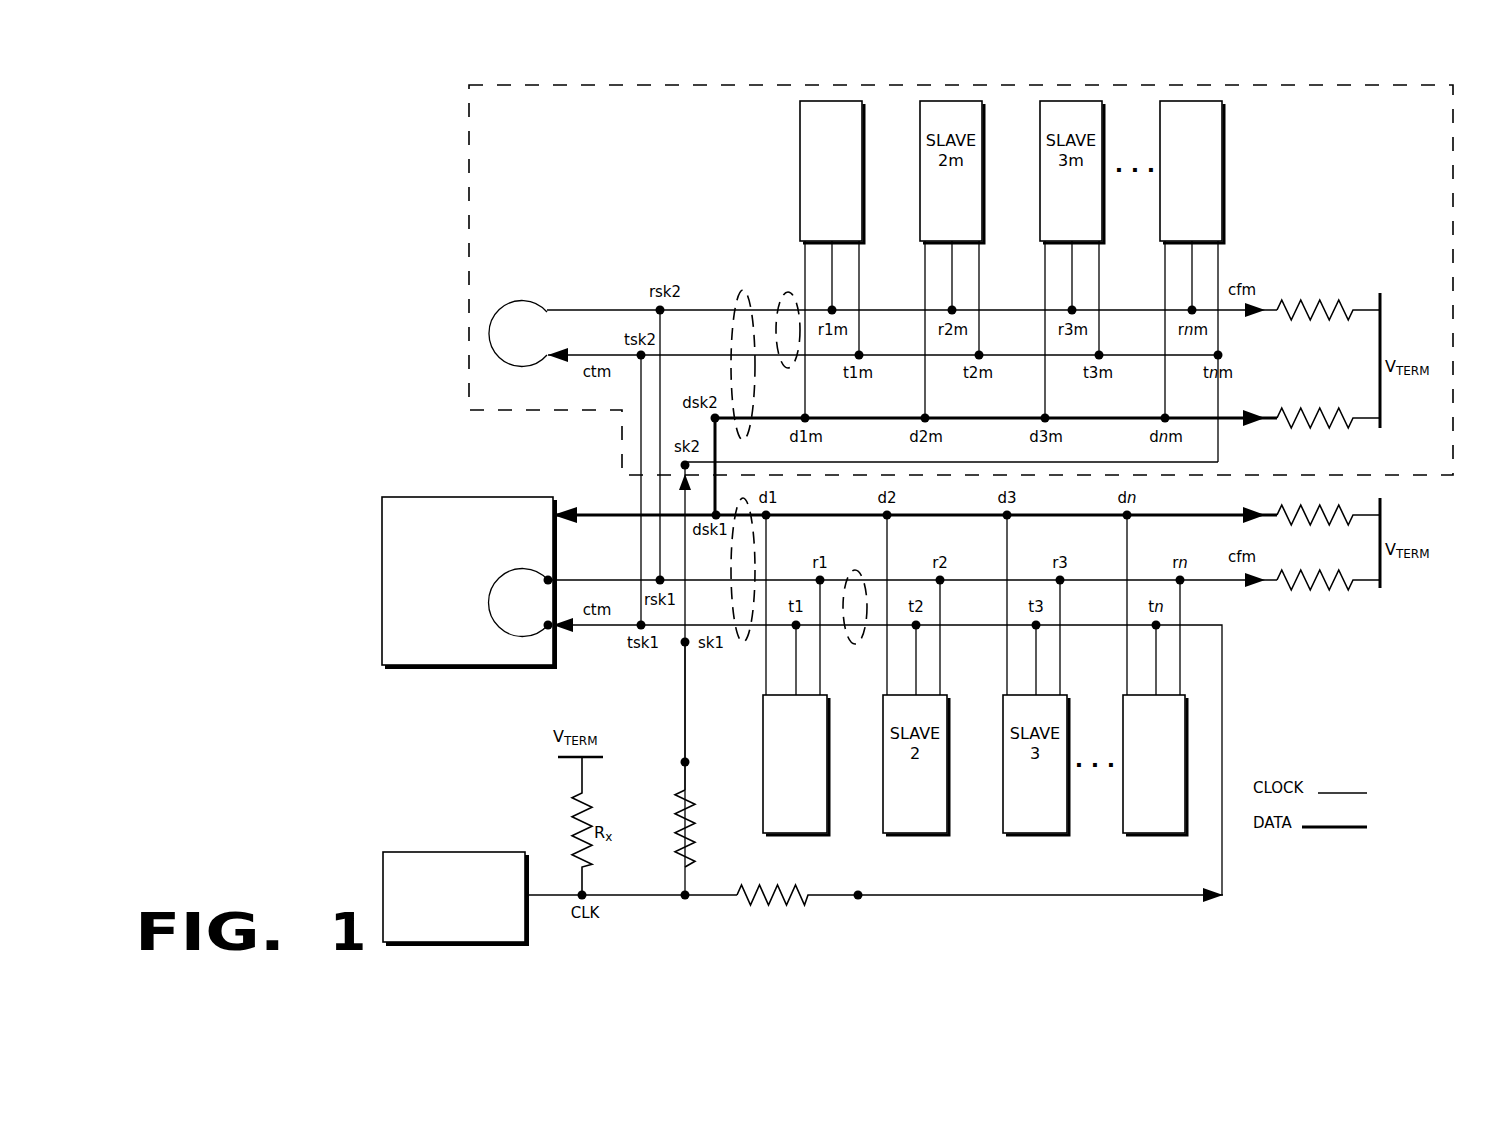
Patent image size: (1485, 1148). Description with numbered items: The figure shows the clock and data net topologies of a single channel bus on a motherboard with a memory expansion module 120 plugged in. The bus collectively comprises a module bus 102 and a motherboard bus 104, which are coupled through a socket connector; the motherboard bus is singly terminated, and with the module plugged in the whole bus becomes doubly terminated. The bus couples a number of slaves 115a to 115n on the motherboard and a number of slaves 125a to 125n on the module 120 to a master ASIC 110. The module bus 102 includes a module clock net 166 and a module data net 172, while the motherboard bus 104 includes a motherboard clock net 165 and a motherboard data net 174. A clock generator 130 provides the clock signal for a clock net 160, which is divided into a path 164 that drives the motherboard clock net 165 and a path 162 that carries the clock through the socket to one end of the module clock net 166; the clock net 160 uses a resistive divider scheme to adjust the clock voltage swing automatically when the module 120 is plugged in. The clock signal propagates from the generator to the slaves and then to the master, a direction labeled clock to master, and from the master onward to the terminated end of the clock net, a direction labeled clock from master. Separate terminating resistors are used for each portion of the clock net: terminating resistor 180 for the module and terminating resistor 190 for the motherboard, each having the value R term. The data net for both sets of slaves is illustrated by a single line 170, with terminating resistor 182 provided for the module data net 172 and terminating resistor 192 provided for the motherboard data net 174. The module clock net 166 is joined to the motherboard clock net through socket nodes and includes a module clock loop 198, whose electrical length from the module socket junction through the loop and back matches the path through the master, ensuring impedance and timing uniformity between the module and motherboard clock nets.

The module bus 102 is at (744, 292).
The motherboard bus 104 is at (743, 645).
The master ASIC 110 is at (521, 661).
The slave 115a is at (786, 828).
The slave 115n is at (1146, 828).
The memory expansion module 120 is at (468, 200).
The slave 125a is at (849, 233).
The slave 125n is at (1209, 233).
The clock generator 130 is at (493, 940).
The clock net 160 is at (650, 898).
The path 162 is at (683, 692).
The path 164 is at (950, 898).
The motherboard clock net 165 is at (851, 647).
The module clock net 166 is at (788, 292).
The data net 170 is at (614, 520).
The module data net 172 is at (792, 414).
The motherboard data net 174 is at (838, 520).
The terminating resistor 180 is at (1325, 338).
The terminating resistor 182 is at (1325, 448).
The terminating resistor 190 is at (1325, 606).
The terminating resistor 192 is at (1325, 541).
The module clock loop 198 is at (531, 303).